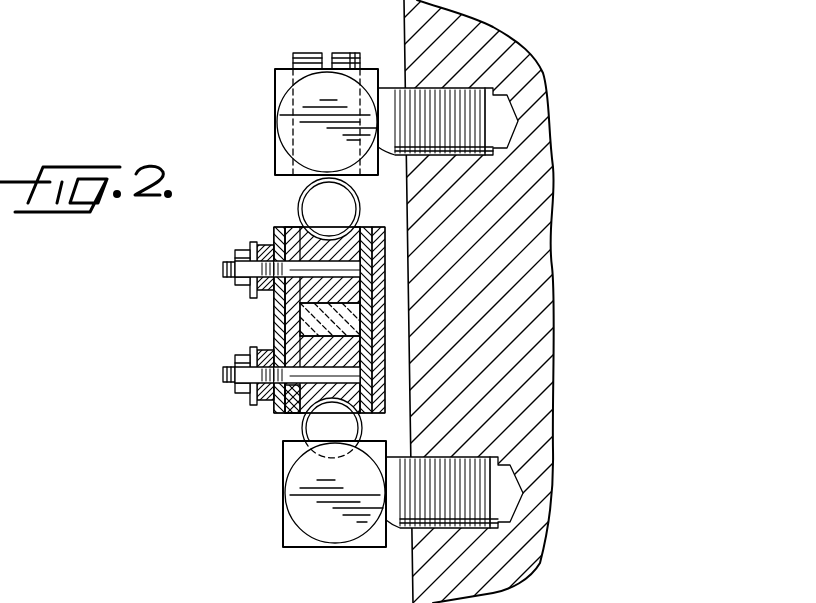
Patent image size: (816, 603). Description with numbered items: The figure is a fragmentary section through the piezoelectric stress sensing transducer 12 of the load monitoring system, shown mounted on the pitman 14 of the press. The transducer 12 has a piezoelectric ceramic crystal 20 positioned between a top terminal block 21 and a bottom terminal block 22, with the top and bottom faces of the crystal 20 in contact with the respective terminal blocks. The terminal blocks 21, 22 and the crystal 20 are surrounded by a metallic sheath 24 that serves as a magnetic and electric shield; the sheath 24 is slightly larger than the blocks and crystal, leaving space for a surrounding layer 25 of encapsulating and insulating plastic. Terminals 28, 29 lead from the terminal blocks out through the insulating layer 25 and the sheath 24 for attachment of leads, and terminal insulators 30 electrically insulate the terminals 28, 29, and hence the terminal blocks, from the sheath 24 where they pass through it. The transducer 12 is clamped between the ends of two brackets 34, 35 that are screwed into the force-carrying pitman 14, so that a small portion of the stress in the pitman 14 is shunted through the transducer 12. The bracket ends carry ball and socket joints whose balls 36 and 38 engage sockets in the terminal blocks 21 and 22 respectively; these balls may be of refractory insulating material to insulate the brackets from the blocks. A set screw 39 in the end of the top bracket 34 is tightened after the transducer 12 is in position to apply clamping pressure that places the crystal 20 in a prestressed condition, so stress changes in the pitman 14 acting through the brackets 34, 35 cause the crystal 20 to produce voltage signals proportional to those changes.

The piezoelectric stress sensing transducer 12 is at (247, 412).
The pitman 14 is at (545, 190).
The piezoelectric ceramic crystal 20 is at (309, 318).
The top terminal block 21 is at (298, 226).
The bottom terminal block 22 is at (292, 415).
The metallic sheath 24 is at (370, 318).
The surrounding layer 25 is at (374, 347).
The terminal 28 is at (223, 270).
The terminal 29 is at (223, 378).
The terminal insulator 30 is at (265, 245).
The top bracket 34 is at (278, 133).
The bottom bracket 35 is at (284, 527).
The ball 36 is at (347, 212).
The ball 38 is at (359, 430).
The set screw 39 is at (304, 53).